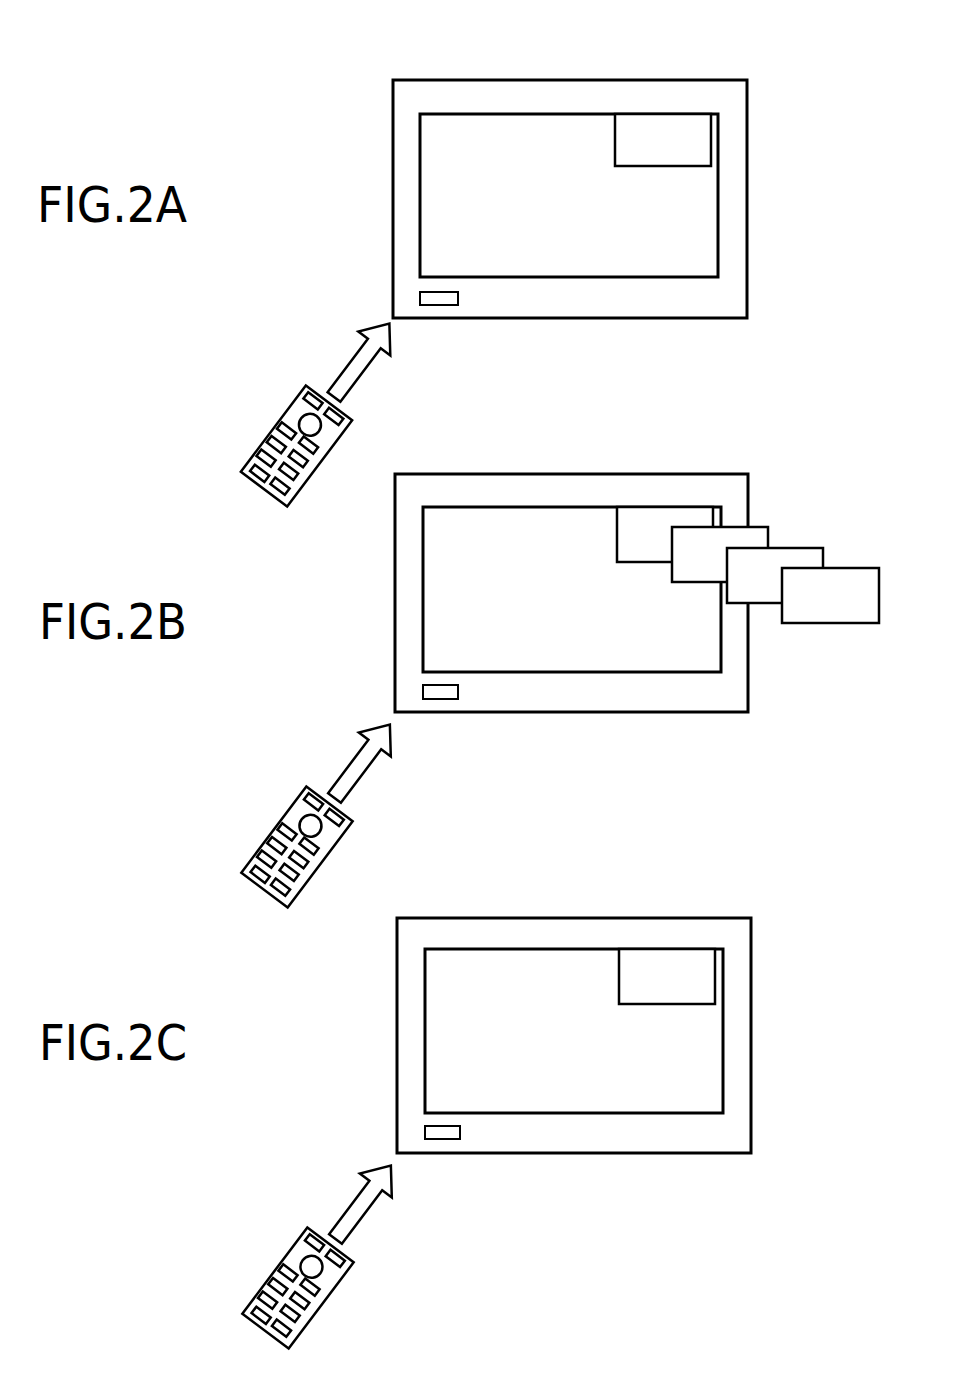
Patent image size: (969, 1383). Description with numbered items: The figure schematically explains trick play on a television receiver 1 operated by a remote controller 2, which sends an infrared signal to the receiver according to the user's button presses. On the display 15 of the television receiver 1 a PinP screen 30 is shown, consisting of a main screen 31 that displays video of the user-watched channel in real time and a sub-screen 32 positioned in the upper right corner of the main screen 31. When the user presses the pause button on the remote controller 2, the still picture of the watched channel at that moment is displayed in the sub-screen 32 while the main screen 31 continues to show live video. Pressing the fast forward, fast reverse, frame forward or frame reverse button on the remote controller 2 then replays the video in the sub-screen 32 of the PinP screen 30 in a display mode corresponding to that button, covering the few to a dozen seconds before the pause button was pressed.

In FIG. 2A, the television receiver 1 is at (747, 295).
In FIG. 2B, the television receiver 1 is at (737, 712).
In FIG. 2C, the television receiver 1 is at (752, 1135).
In FIG. 2A, the remote controller 2 is at (272, 430).
In FIG. 2B, the remote controller 2 is at (272, 831).
In FIG. 2C, the remote controller 2 is at (272, 1272).
In FIG. 2A, the display 15 is at (710, 212).
In FIG. 2B, the display 15 is at (585, 662).
In FIG. 2C, the display 15 is at (693, 1100).
In FIG. 2A, the PinP screen 30 is at (640, 98).
In FIG. 2B, the PinP screen 30 is at (560, 492).
In FIG. 2C, the PinP screen 30 is at (563, 935).
In FIG. 2A, the main screen 31 is at (487, 137).
In FIG. 2B, the main screen 31 is at (488, 530).
In FIG. 2C, the main screen 31 is at (490, 972).
In FIG. 2A, the sub-screen 32 is at (695, 120).
In FIG. 2B, the sub-screen 32 is at (695, 515).
In FIG. 2C, the sub-screen 32 is at (698, 958).